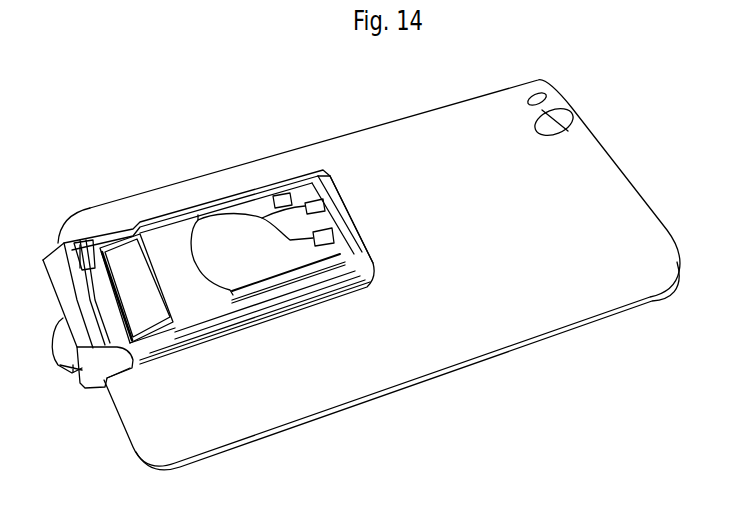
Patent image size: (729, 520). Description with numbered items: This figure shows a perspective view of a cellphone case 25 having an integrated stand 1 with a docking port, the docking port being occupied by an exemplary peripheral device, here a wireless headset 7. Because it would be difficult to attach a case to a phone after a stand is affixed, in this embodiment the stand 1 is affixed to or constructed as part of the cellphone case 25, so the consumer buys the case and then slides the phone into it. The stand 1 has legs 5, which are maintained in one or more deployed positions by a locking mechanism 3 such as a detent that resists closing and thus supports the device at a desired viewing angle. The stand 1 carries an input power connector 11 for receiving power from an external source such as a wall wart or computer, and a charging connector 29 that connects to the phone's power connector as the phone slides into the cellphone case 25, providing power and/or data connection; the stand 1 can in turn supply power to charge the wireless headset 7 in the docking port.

The stand 1 is at (58, 243).
The locking mechanism 3 is at (115, 250).
The legs 5 is at (198, 215).
The wireless headset 7 is at (350, 220).
The input power connector 11 is at (87, 258).
The cellphone case 25 is at (489, 201).
The charging connector 29 is at (58, 358).